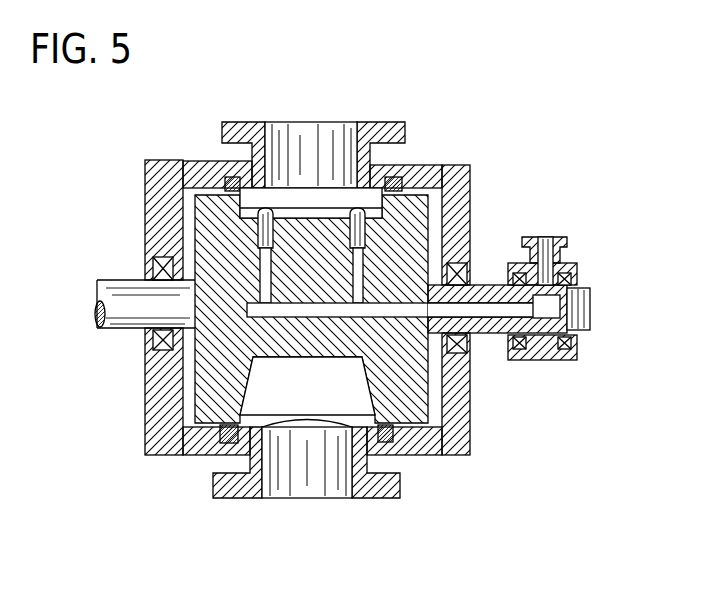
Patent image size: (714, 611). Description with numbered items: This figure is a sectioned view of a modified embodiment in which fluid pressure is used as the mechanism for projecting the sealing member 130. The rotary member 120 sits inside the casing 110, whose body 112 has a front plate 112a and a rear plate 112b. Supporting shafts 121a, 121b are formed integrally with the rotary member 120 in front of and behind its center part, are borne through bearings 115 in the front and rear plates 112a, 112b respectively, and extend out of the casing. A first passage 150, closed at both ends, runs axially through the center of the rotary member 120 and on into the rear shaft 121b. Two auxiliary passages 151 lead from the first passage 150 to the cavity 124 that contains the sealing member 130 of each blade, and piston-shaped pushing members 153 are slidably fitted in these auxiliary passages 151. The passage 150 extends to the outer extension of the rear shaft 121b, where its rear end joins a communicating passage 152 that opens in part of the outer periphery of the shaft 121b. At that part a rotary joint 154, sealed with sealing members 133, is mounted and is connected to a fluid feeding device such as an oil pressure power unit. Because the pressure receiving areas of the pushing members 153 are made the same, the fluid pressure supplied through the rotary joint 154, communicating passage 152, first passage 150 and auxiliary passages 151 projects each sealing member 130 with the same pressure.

The casing 110 is at (431, 163).
The body 112 is at (160, 160).
The front plate 112a is at (152, 212).
The rear plate 112b is at (470, 190).
The bearings 115 is at (147, 345).
The rotary member 120 is at (203, 425).
The front supporting shaft 121a is at (117, 293).
The rear supporting shaft 121b is at (588, 292).
The cavity 124 is at (305, 217).
The sealing member 130 is at (287, 197).
The sealing members 133 is at (518, 273).
The first passage 150 is at (267, 310).
The auxiliary passages 151 is at (357, 265).
The communicating passage 152 is at (587, 328).
The piston-shaped pushing members 153 is at (257, 228).
The rotary joint 154 is at (557, 237).